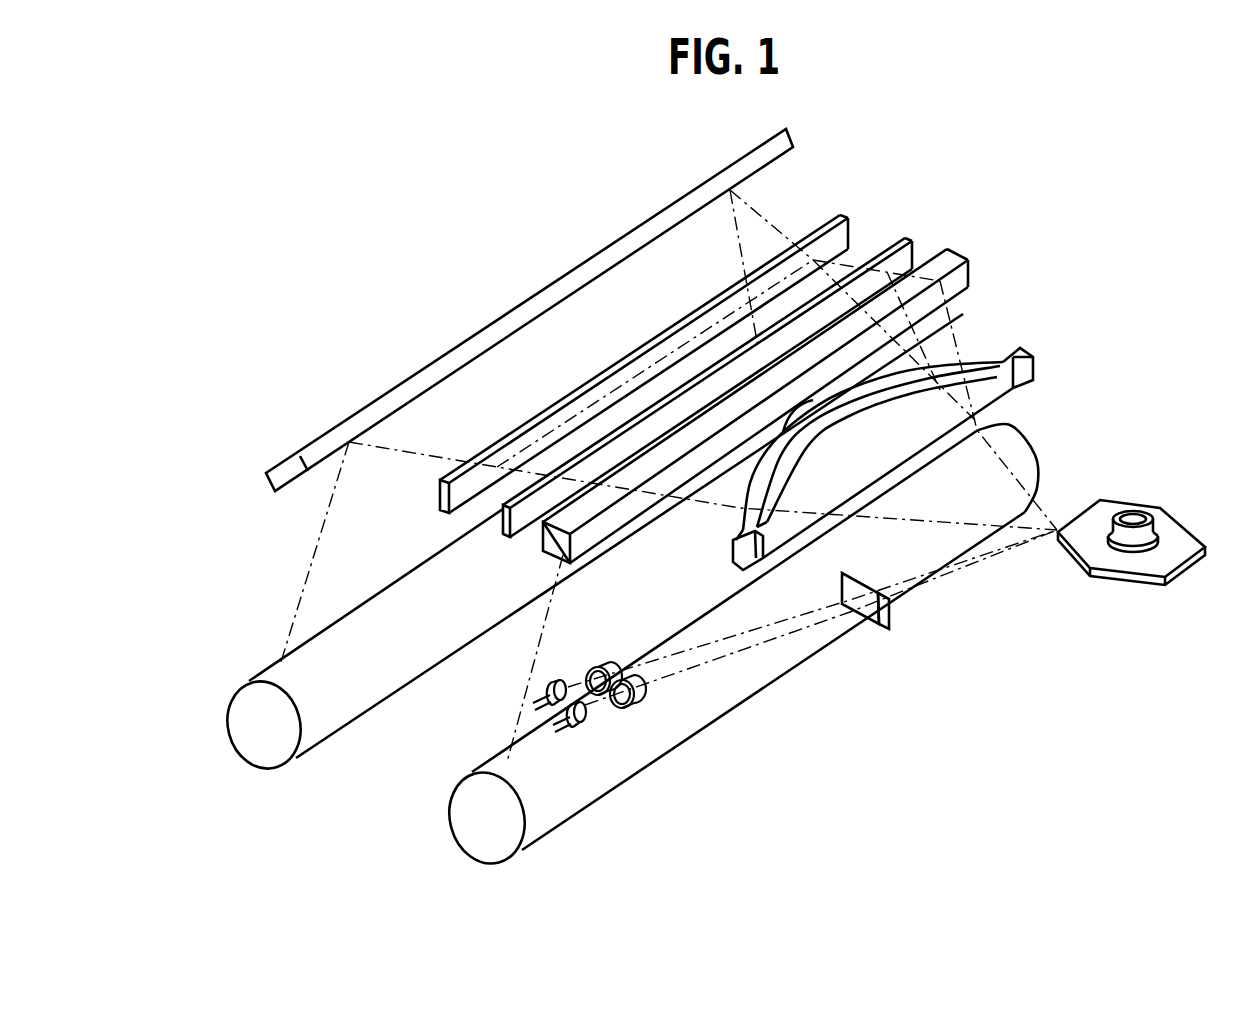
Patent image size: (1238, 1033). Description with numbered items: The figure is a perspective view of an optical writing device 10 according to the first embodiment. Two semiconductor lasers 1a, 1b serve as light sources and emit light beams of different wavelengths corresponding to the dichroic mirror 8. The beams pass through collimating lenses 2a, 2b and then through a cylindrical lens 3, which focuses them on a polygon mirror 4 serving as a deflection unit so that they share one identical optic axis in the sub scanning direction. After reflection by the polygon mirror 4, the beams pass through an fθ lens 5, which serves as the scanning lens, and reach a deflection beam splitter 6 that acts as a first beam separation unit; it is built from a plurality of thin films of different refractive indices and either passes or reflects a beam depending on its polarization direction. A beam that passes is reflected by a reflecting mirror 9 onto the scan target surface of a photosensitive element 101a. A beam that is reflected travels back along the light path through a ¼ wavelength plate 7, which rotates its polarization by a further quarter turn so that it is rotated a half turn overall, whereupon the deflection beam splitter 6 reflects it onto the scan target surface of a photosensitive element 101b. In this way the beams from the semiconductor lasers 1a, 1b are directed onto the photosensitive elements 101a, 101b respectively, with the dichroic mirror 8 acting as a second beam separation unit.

The optical writing device 10 is at (411, 295).
The semiconductor laser 1a is at (587, 715).
The semiconductor laser 1b is at (563, 680).
The collimating lens 2a is at (638, 700).
The collimating lens 2b is at (610, 664).
The cylindrical lens 3 is at (890, 614).
The polygon mirror 4 is at (1180, 508).
The fθ lens 5 is at (1022, 347).
The deflection beam splitter 6 is at (962, 256).
The ¼ wavelength plate 7 is at (912, 242).
The dichroic mirror 8 is at (850, 214).
The reflecting mirror 9 is at (794, 133).
The photosensitive element 101a is at (357, 703).
The photosensitive element 101b is at (595, 788).